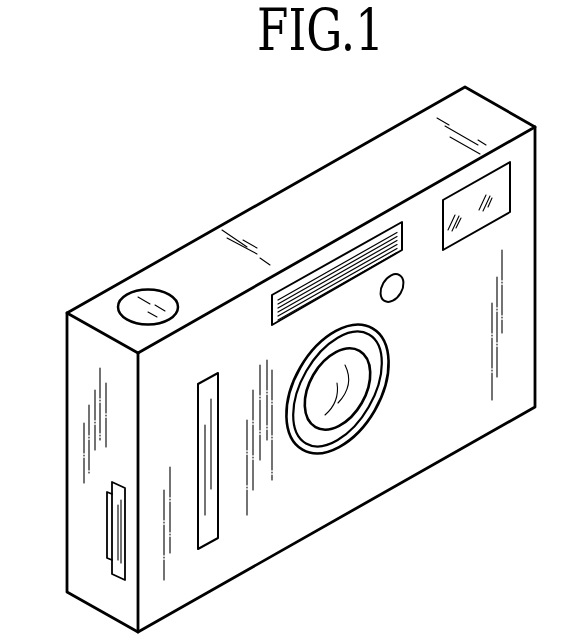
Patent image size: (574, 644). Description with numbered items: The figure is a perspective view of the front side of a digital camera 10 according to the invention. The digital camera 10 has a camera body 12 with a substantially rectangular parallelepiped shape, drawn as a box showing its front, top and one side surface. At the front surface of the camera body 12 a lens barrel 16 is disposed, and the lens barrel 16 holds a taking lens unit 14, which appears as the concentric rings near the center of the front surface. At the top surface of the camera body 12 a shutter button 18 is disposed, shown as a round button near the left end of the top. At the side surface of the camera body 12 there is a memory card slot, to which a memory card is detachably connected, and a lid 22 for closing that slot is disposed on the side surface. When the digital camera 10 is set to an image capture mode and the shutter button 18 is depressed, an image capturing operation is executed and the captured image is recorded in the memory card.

The digital camera 10 is at (214, 190).
The camera body 12 is at (192, 253).
The taking lens unit 14 is at (360, 365).
The lens barrel 16 is at (382, 394).
The shutter button 18 is at (137, 291).
The lid 22 is at (115, 560).